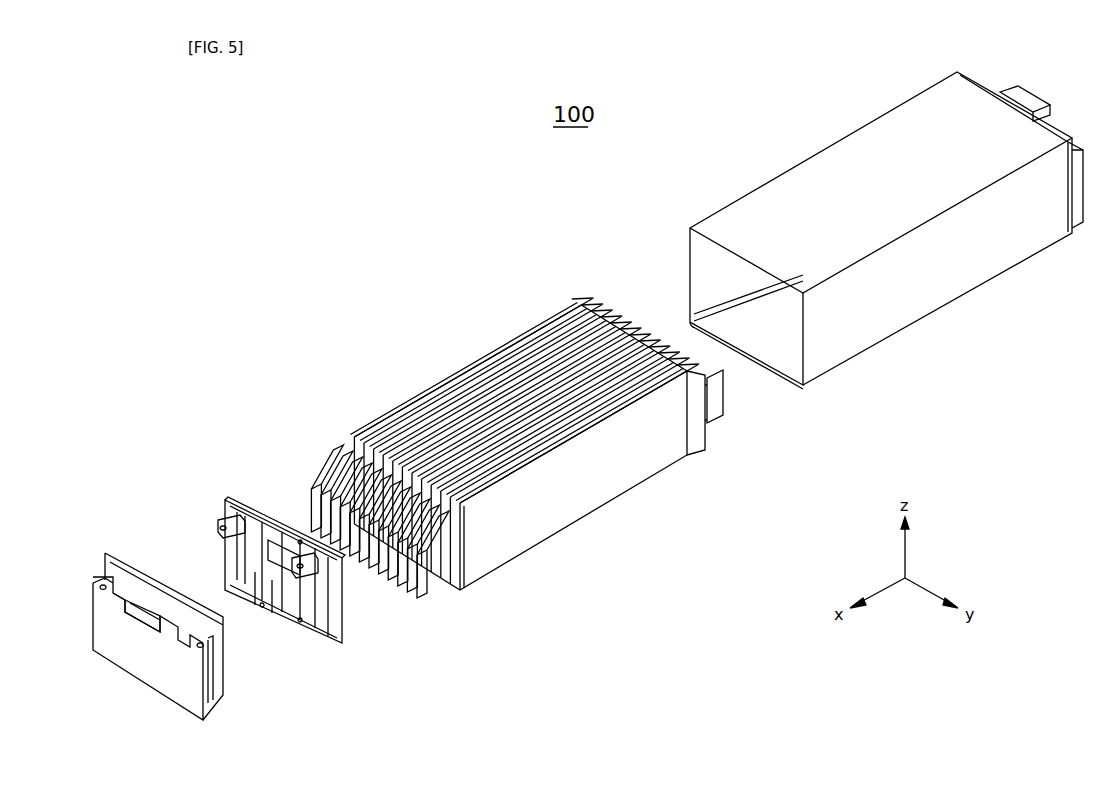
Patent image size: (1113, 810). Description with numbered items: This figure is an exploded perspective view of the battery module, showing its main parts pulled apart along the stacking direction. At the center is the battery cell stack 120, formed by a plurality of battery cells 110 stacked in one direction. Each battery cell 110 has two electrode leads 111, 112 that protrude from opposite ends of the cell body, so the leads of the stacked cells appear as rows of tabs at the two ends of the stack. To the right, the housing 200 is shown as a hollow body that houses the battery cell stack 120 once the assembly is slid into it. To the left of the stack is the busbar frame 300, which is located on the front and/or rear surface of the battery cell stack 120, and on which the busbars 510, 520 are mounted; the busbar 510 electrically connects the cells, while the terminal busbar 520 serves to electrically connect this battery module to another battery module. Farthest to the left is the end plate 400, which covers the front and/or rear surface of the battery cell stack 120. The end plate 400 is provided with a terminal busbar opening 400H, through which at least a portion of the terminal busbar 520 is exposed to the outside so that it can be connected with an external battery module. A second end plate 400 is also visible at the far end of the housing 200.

The battery cell 110 is at (582, 500).
The electrode lead 111 is at (313, 490).
The electrode lead 112 is at (730, 385).
The battery cell stack 120 is at (474, 597).
The housing 200 is at (930, 294).
The busbar frame 300 is at (284, 566).
The end plate 400 is at (1030, 100).
The terminal busbar opening 400H is at (155, 600).
The busbar 510 is at (270, 615).
The terminal busbar 520 is at (203, 530).